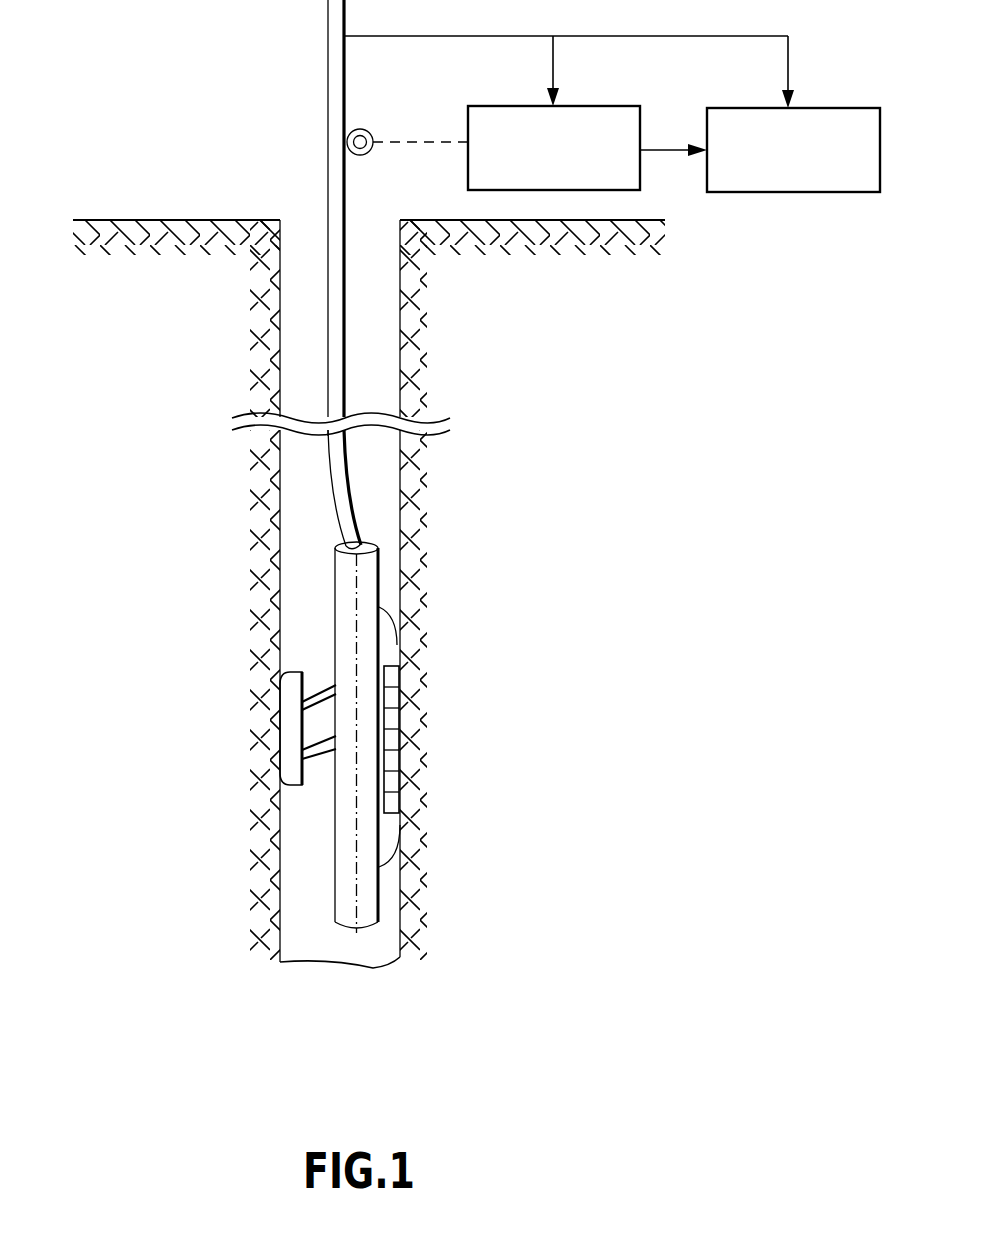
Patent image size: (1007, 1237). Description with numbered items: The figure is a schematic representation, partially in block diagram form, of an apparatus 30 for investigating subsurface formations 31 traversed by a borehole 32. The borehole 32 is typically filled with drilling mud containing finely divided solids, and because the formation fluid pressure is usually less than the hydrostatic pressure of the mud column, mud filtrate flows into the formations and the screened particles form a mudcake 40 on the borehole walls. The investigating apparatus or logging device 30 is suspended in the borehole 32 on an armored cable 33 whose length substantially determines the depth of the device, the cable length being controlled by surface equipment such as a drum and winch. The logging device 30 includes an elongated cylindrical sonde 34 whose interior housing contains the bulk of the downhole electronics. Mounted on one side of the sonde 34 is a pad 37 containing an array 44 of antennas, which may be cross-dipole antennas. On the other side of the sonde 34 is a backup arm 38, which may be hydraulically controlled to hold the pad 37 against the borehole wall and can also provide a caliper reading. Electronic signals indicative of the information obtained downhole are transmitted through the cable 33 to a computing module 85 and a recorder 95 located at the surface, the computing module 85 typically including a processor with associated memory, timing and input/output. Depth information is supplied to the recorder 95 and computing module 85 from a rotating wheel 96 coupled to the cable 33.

The apparatus 30 is at (347, 684).
The subsurface formations 31 is at (222, 220).
The borehole 32 is at (309, 300).
The armored cable 33 is at (328, 130).
The elongated cylindrical sonde 34 is at (345, 643).
The pad 37 is at (385, 645).
The backup arm 38 is at (288, 730).
The mudcake 40 is at (262, 592).
The array of antennas 44 is at (425, 726).
The computing module 85 is at (468, 118).
The recorder 95 is at (812, 108).
The rotating wheel 96 is at (373, 151).